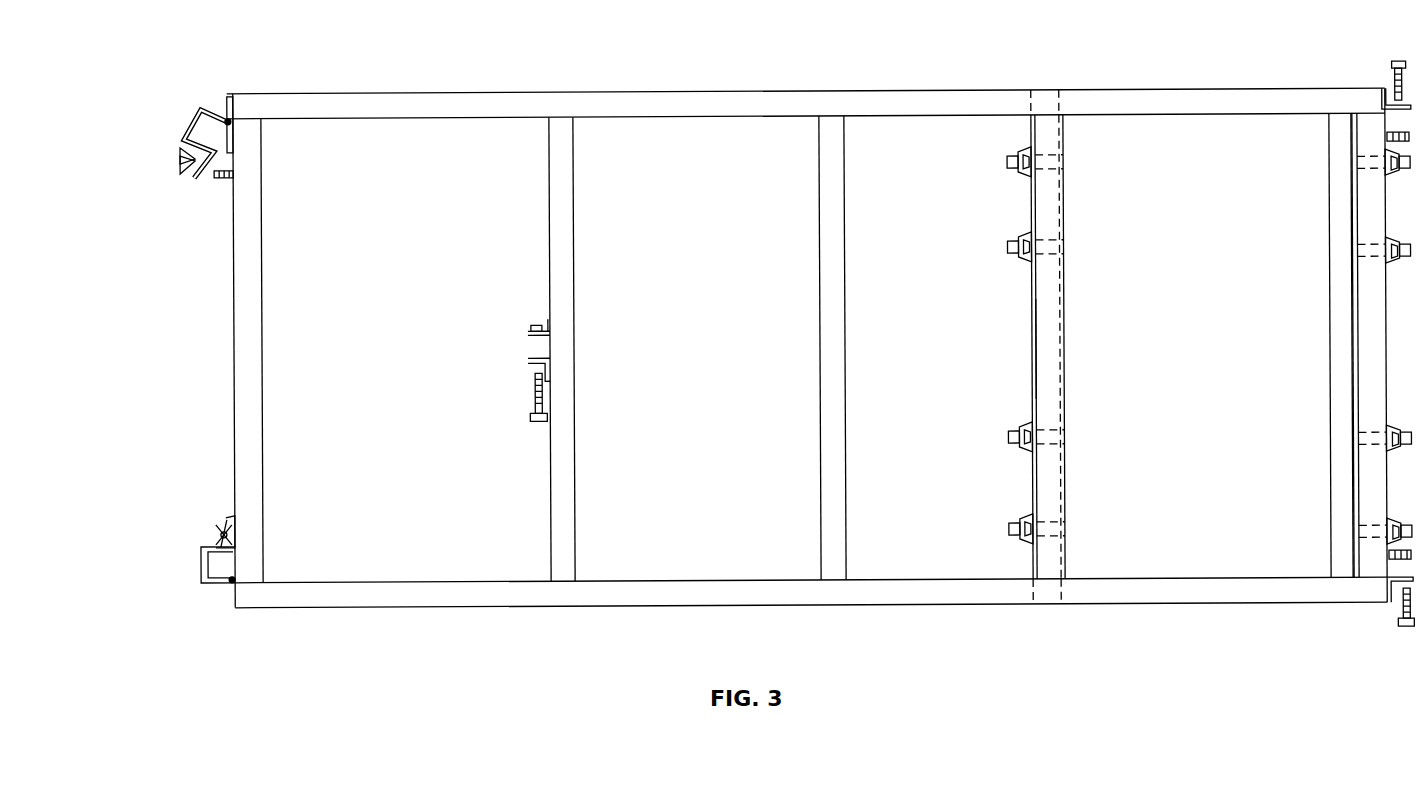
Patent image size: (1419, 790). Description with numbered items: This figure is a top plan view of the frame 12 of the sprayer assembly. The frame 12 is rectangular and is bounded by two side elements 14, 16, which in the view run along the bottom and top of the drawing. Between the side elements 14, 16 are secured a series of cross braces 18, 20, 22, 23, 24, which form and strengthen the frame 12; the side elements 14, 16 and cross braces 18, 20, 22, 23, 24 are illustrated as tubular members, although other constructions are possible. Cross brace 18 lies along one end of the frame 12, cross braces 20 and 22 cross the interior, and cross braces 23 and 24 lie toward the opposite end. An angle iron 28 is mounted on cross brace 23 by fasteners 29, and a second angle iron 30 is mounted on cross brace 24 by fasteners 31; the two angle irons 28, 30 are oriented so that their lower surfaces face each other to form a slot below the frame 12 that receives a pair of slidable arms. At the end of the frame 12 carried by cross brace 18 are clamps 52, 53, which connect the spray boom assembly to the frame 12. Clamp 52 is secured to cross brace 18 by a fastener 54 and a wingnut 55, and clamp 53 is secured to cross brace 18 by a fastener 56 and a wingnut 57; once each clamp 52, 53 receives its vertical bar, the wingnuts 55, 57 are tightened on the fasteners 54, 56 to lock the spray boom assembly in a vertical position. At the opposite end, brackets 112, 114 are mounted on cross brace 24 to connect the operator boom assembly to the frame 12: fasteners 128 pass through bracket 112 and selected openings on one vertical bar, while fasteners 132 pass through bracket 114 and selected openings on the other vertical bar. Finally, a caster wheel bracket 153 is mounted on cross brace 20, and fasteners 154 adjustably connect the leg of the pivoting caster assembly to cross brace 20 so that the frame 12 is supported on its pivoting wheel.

The frame 12 is at (663, 86).
The side element 14 is at (478, 599).
The side element 16 is at (415, 99).
The cross brace 18 is at (248, 222).
The cross brace 20 is at (568, 223).
The cross brace 22 is at (838, 224).
The cross brace 23 is at (1045, 312).
The cross brace 24 is at (1375, 215).
The angle iron 28 is at (1028, 355).
The fasteners 29 is at (1012, 243).
The angle iron 30 is at (1335, 152).
The fasteners 31 is at (1405, 433).
The clamp 52 is at (215, 583).
The clamp 53 is at (197, 110).
The fastener 54 is at (220, 529).
The wingnut 55 is at (222, 514).
The fastener 56 is at (220, 176).
The wingnut 57 is at (184, 171).
The bracket 112 is at (1398, 581).
The bracket 114 is at (1402, 119).
The fasteners 128 is at (1395, 615).
The fasteners 132 is at (1393, 78).
The caster wheel bracket 153 is at (532, 356).
The fasteners 154 is at (531, 393).